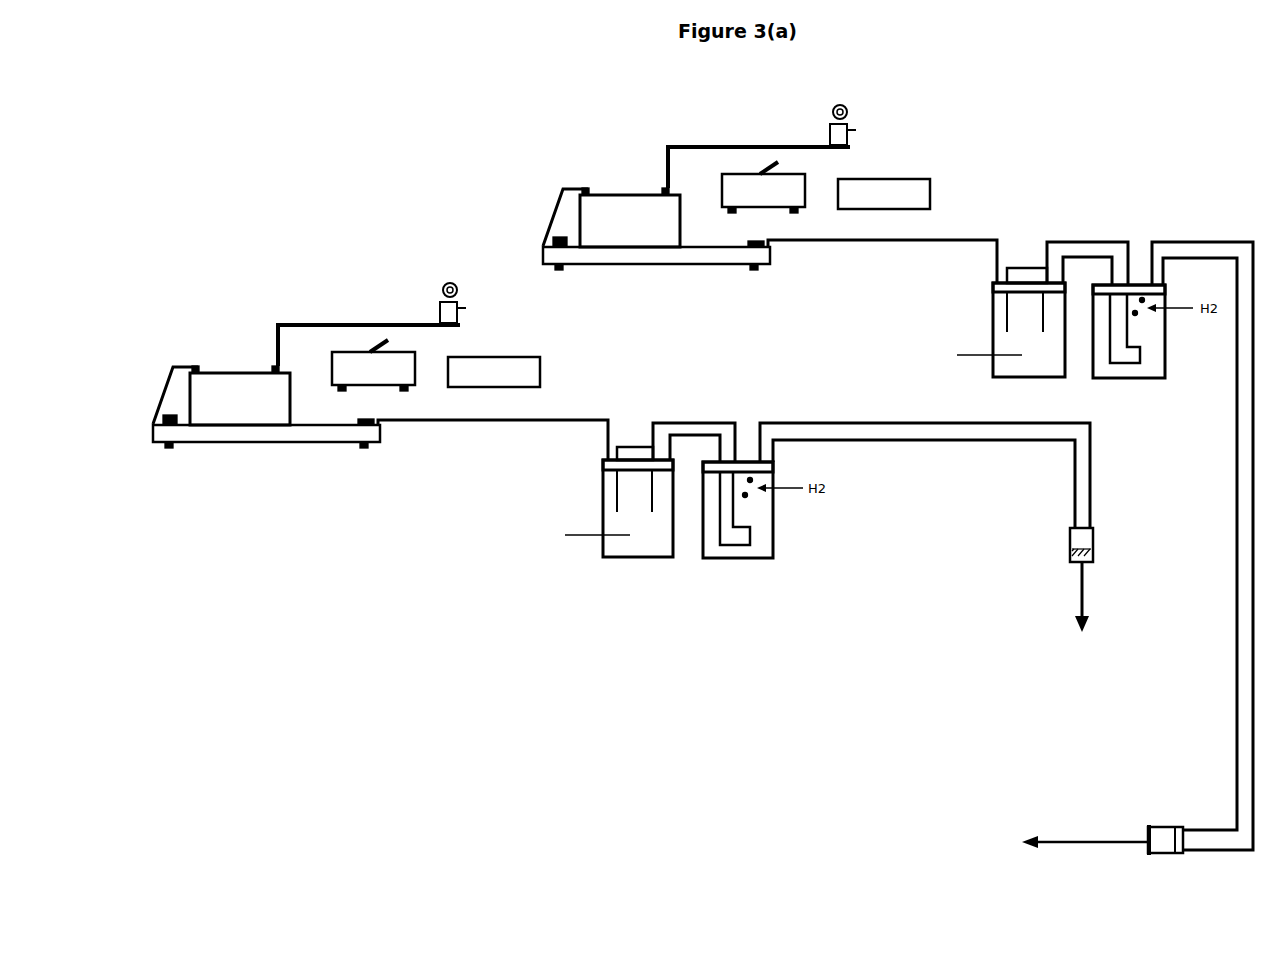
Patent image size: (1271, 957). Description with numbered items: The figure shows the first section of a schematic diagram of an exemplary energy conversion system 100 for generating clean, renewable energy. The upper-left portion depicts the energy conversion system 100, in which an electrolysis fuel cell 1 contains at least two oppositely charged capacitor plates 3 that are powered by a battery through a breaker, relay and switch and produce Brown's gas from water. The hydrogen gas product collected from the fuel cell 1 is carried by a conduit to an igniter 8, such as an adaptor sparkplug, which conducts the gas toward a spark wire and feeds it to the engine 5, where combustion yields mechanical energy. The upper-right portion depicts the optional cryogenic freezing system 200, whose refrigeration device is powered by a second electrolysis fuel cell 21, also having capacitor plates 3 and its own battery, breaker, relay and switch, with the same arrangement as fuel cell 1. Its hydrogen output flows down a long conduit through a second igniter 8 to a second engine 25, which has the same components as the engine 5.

The energy conversion system 100 is at (398, 193).
The cryogenic freezing system 200 is at (1117, 192).
The electrolysis fuel cell 1 is at (603, 552).
The second electrolysis fuel cell 21 is at (993, 372).
The capacitor plates 3 is at (652, 497).
The igniter 8 is at (1093, 537).
The engine 5 is at (1082, 610).
The second engine 25 is at (1068, 843).